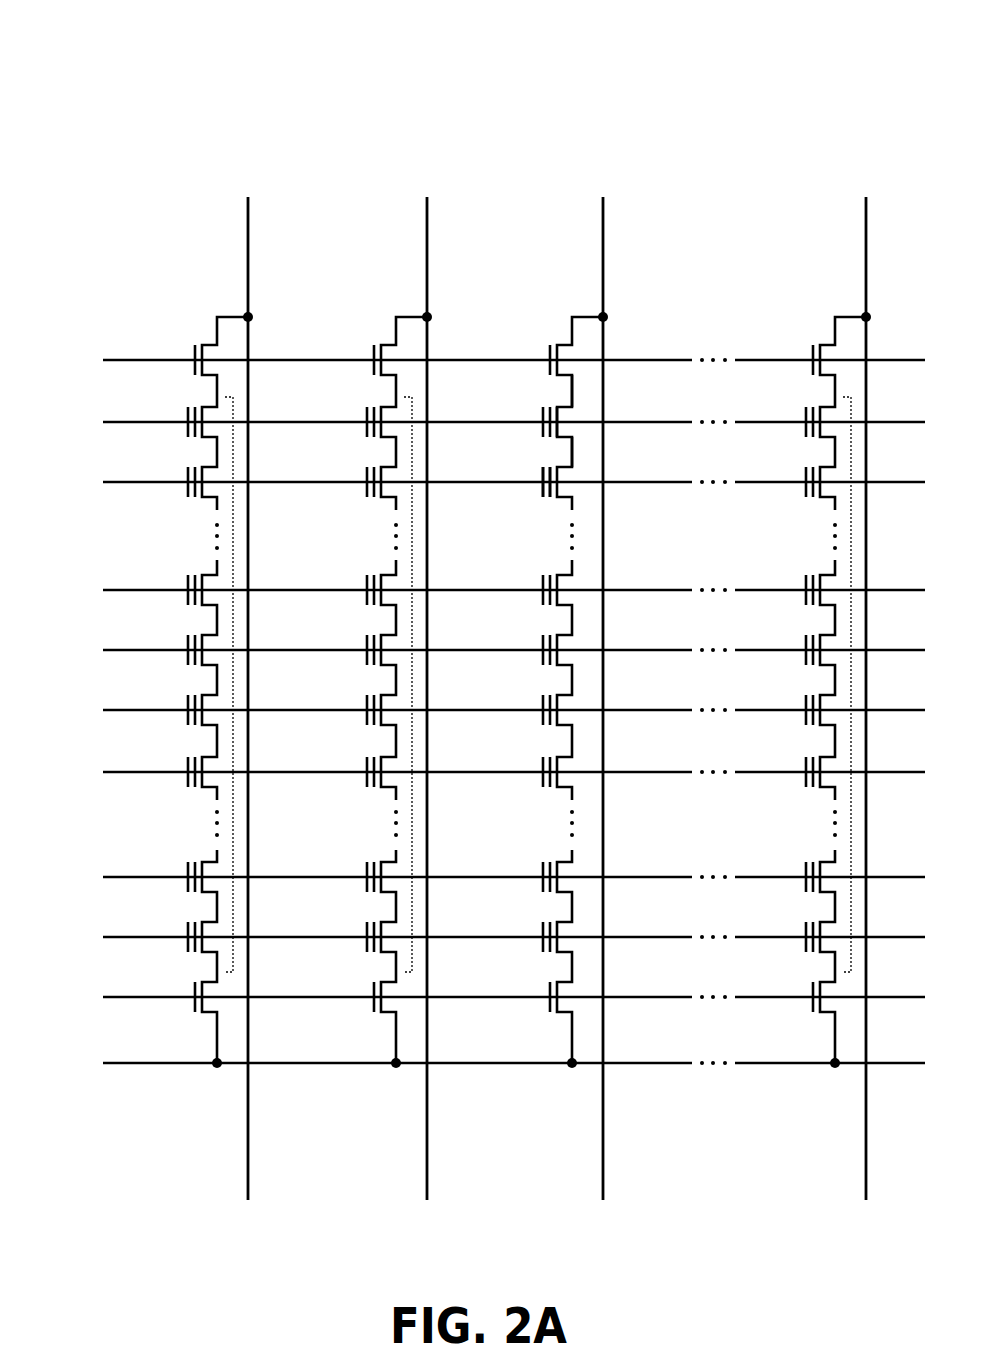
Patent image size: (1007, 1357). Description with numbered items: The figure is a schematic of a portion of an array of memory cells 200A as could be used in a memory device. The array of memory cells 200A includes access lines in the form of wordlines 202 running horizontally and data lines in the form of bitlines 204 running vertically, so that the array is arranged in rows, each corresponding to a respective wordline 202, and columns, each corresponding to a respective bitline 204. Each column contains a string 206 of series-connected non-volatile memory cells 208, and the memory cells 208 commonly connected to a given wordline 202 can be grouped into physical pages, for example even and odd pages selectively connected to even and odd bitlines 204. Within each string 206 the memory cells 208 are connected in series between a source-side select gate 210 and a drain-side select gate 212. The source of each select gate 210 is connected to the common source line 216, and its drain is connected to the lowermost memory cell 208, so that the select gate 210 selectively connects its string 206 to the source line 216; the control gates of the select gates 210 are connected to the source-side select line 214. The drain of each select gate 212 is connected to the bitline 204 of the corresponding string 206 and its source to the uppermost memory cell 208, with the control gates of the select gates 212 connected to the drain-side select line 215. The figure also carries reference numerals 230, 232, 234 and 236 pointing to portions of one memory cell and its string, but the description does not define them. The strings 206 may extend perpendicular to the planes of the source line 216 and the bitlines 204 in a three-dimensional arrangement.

The array of memory cells 200A is at (112, 55).
The wordlines 202 is at (154, 935).
The bitline 204 is at (866, 243).
The string of series-connected memory cells 206 is at (853, 680).
The memory cells 208 is at (200, 952).
The select gate 210 is at (823, 1014).
The select gate 212 is at (823, 342).
The select line 214 is at (760, 995).
The select line 215 is at (770, 358).
The source line 216 is at (165, 1066).
The source 230 is at (576, 450).
The drain 232 is at (568, 398).
The control gate 234 is at (550, 406).
The data storage structure 236 is at (540, 436).